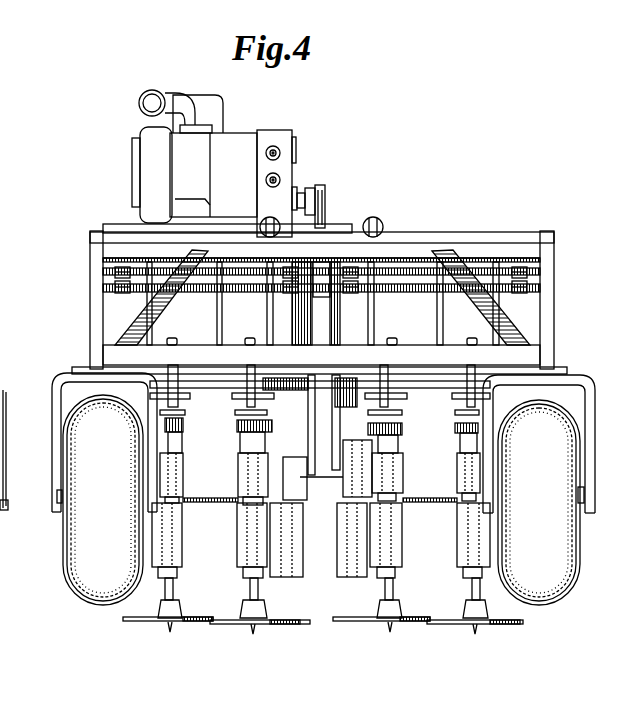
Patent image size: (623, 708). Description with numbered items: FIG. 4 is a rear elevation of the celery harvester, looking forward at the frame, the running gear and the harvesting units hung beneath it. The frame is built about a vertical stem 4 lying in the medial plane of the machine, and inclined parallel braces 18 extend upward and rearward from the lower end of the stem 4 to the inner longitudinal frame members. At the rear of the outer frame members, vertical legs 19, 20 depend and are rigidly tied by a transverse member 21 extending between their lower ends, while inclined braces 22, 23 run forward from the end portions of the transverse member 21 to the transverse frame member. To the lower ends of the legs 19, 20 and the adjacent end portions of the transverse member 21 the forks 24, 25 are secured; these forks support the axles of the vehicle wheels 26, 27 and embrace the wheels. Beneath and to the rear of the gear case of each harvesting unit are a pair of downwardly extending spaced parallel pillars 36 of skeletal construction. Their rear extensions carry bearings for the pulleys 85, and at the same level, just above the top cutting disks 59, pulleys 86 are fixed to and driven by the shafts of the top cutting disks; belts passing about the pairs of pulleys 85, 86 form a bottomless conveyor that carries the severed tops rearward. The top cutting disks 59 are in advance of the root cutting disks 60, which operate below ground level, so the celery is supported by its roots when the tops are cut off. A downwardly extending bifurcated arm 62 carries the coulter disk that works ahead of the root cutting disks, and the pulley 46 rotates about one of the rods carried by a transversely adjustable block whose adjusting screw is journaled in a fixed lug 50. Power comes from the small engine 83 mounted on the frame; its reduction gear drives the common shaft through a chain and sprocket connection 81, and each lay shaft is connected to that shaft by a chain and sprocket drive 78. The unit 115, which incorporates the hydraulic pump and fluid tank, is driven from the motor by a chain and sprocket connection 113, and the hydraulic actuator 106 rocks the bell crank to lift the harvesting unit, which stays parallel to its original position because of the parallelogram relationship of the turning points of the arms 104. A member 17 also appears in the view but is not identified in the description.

The vertical stem 4 is at (323, 328).
The shaft 17 is at (342, 316).
The inclined brace 18 is at (300, 318).
The vertical leg 19 is at (548, 297).
The vertical leg 20 is at (103, 293).
The transverse member 21 is at (397, 357).
The inclined brace 22 is at (496, 312).
The inclined brace 23 is at (143, 320).
The fork 24 is at (578, 381).
The fork 25 is at (57, 376).
The vehicle wheel 26 is at (545, 457).
The vehicle wheel 27 is at (82, 478).
The pillar 36 is at (120, 423).
The pulley 46 is at (310, 522).
The fixed lug 50 is at (348, 456).
The top cutting disk 59 is at (195, 500).
The root cutting disk 60 is at (228, 618).
The bifurcated arm 62 is at (168, 625).
The chain and sprocket drive 78 is at (222, 306).
The chain and sprocket connection 81 is at (327, 218).
The small engine 83 is at (178, 150).
The pulley 85 is at (237, 427).
The pulley 86 is at (238, 462).
The arm 104 is at (262, 325).
The actuator 106 is at (258, 226).
The chain and sprocket connection 113 is at (310, 187).
The hydraulic pump unit 115 is at (273, 133).